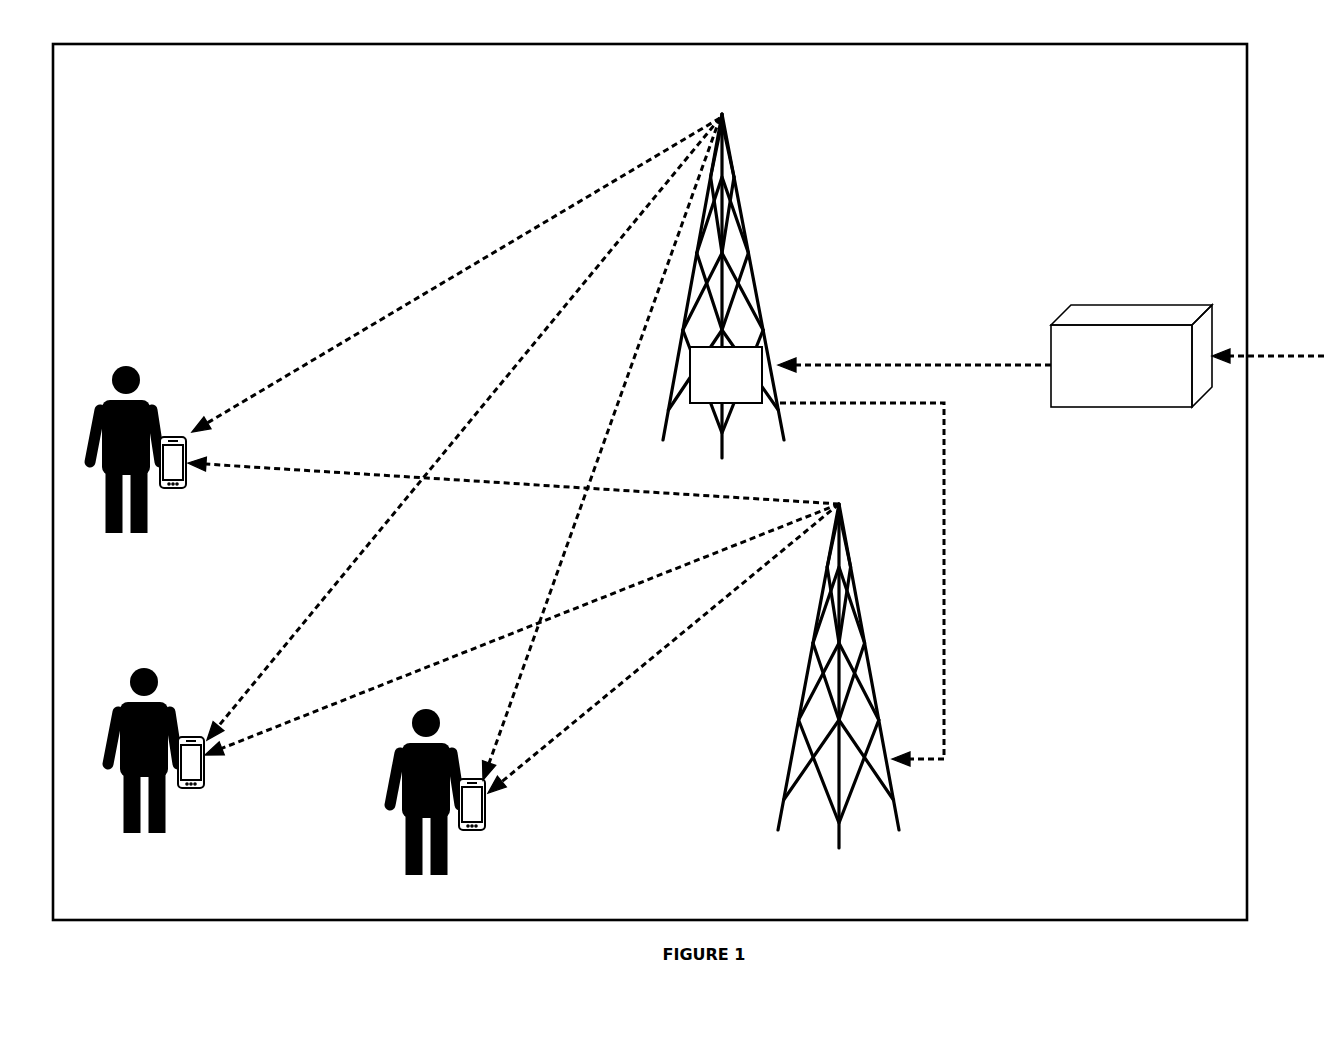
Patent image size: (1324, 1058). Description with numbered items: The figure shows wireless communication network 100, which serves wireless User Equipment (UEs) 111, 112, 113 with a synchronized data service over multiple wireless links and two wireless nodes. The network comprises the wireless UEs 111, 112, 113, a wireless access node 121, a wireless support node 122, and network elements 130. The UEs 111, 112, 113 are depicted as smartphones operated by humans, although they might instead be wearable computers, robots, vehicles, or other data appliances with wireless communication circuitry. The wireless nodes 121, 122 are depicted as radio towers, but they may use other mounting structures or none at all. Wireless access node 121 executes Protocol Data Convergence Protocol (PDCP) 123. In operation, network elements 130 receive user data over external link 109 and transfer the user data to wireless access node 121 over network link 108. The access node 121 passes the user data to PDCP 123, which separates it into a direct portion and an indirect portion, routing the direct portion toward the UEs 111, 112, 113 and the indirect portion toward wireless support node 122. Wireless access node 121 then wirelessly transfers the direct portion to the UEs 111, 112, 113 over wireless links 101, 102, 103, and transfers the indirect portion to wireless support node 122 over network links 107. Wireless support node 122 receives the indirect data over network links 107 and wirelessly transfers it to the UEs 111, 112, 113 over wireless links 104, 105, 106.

The wireless communication network 100 is at (862, 75).
The wireless link 101 is at (303, 367).
The wireless link 102 is at (305, 622).
The wireless link 103 is at (558, 567).
The wireless link 104 is at (332, 470).
The wireless link 105 is at (390, 685).
The wireless link 106 is at (640, 668).
The network link 107 is at (944, 608).
The network link 108 is at (878, 360).
The external link 109 is at (1262, 352).
The wireless User Equipment 111 is at (187, 473).
The wireless User Equipment 112 is at (205, 776).
The wireless User Equipment 113 is at (487, 817).
The wireless access node 121 is at (738, 146).
The wireless support node 122 is at (795, 745).
The Protocol Data Convergence Protocol 123 is at (726, 375).
The network elements 130 is at (1131, 356).